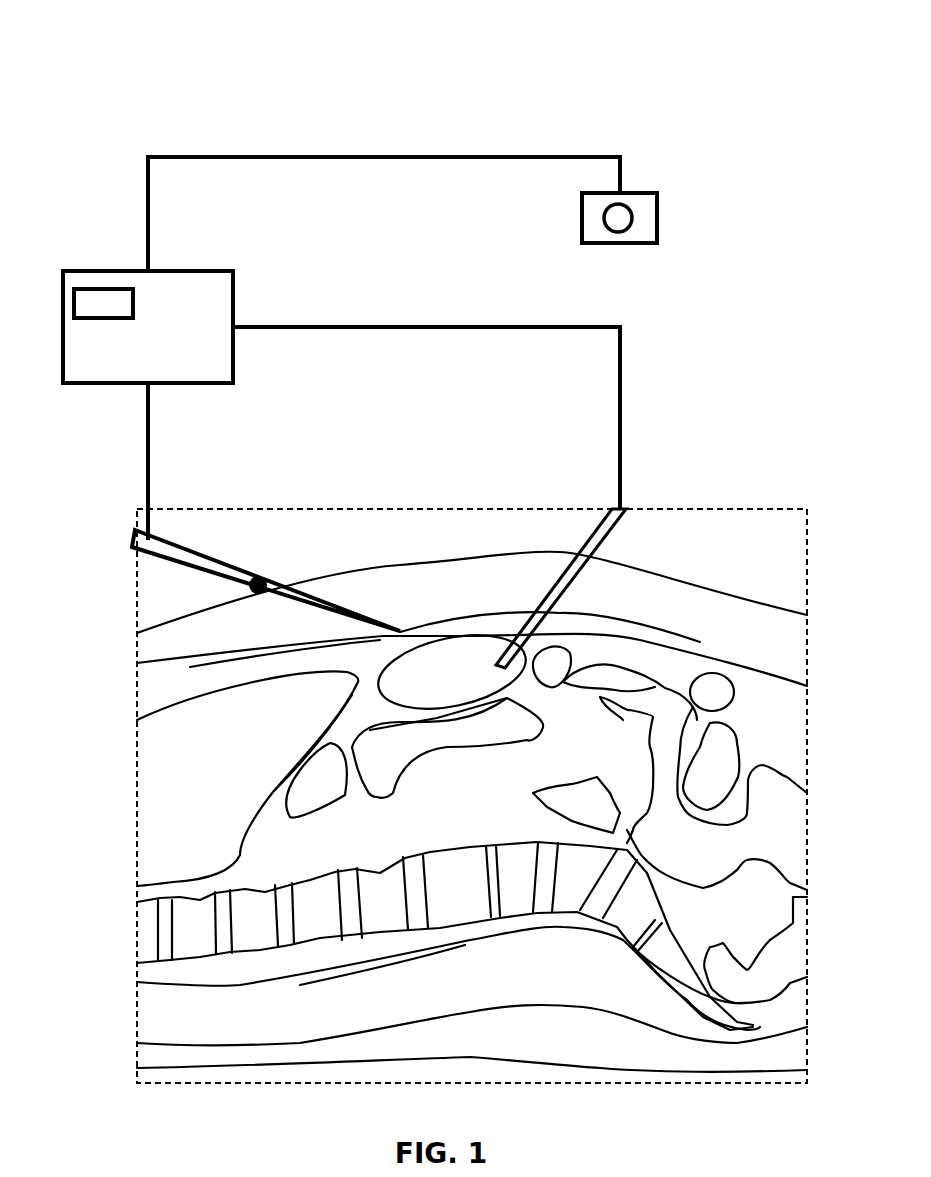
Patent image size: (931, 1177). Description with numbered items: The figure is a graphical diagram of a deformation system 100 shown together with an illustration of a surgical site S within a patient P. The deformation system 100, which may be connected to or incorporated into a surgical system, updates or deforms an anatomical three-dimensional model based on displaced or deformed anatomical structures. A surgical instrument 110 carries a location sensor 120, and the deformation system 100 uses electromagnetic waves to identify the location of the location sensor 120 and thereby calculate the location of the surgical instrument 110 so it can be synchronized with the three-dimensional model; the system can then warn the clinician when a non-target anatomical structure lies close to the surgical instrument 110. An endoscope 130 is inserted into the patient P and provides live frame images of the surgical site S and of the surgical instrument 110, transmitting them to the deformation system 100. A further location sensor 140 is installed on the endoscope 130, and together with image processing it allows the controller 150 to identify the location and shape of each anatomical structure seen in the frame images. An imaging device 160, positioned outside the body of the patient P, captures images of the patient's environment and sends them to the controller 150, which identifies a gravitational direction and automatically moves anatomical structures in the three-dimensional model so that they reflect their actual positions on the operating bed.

The deformation system 100 is at (268, 92).
The surgical instrument 110 is at (118, 537).
The location sensor 120 is at (263, 570).
The endoscope 130 is at (572, 587).
The location sensor 140 is at (627, 627).
The controller 150 is at (102, 289).
The imaging device 160 is at (657, 218).
The surgical site S is at (487, 628).
The patient P is at (170, 615).